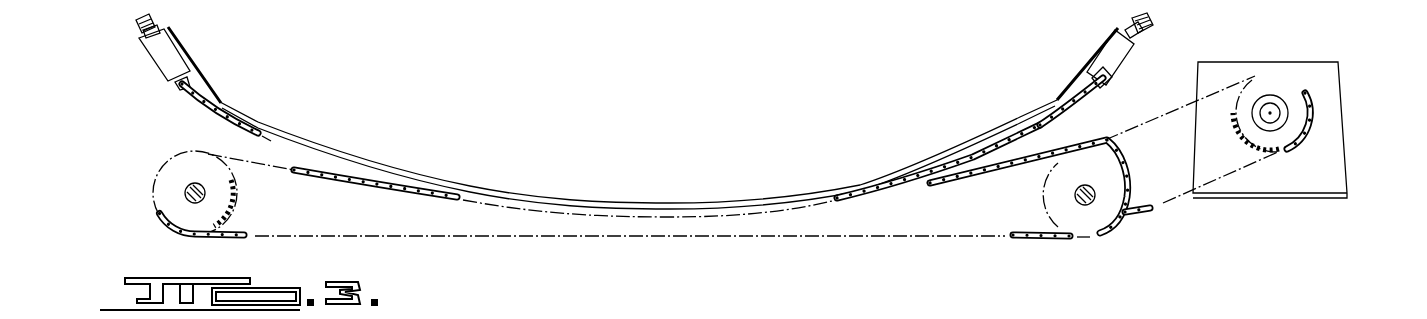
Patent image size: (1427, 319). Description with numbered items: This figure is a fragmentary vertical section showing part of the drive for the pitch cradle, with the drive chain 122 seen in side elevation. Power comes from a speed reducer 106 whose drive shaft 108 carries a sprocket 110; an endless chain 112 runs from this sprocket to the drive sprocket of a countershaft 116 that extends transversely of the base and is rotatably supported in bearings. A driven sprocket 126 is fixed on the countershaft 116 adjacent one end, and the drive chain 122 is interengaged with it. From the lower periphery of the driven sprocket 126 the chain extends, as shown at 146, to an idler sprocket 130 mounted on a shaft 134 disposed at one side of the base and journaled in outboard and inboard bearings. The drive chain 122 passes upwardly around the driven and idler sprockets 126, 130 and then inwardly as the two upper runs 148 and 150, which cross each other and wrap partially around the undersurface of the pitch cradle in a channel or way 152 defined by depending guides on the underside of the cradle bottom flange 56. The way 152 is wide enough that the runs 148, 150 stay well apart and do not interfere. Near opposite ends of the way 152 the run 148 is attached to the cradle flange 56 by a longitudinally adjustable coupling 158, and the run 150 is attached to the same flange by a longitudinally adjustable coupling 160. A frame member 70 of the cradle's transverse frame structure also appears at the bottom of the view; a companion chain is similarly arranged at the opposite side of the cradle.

The bottom flange 56 is at (303, 143).
The frame member 70 is at (630, 277).
The speed reducer 106 is at (1228, 72).
The drive shaft 108 is at (1280, 90).
The sprocket 110 is at (1282, 118).
The endless chain 112 is at (1145, 218).
The countershaft 116 is at (1078, 203).
The drive chain 122 is at (249, 228).
The driven sprocket 126 is at (1055, 188).
The idler sprocket 130 is at (183, 168).
The shaft 134 is at (188, 191).
The lower chain run 146 is at (1038, 240).
The upper chain run 148 is at (957, 188).
The upper chain run 150 is at (327, 187).
The way 152 is at (1047, 128).
The longitudinally adjustable coupling 158 is at (161, 56).
The longitudinally adjustable coupling 160 is at (1128, 50).